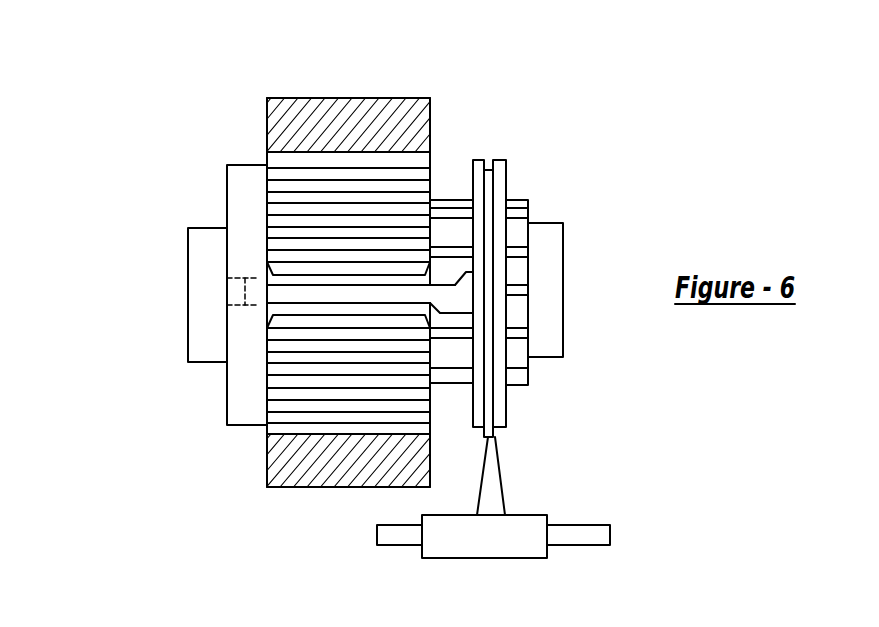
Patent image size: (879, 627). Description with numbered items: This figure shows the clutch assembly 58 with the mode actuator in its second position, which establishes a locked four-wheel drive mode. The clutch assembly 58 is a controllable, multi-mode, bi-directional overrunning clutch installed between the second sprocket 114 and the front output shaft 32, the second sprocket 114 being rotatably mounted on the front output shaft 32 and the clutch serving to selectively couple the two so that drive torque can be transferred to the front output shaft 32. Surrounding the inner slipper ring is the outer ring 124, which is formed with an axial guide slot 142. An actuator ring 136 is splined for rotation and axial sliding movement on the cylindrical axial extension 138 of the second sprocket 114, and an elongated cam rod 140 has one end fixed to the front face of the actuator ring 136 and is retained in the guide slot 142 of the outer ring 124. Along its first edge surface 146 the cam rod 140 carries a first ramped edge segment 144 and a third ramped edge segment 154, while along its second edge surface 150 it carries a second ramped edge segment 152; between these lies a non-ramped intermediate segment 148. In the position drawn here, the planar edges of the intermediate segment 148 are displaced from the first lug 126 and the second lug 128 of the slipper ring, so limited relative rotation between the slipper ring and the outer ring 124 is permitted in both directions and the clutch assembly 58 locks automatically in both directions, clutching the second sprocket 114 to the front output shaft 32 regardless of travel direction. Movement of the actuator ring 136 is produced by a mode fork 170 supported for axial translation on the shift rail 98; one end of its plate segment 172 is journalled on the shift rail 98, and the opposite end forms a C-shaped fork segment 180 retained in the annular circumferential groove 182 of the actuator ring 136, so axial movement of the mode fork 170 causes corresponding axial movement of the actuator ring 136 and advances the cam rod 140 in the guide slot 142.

The clutch assembly 58 is at (420, 97).
The second sprocket 114 is at (267, 152).
The first lug 126 is at (291, 273).
The second lug 128 is at (282, 318).
The cam rod 140 is at (344, 283).
The first edge surface 146 is at (377, 288).
The intermediate segment 148 is at (355, 297).
The second edge surface 150 is at (333, 307).
The second ramped edge segment 152 is at (465, 308).
The third ramped edge segment 154 is at (466, 275).
The outer ring 124 is at (219, 426).
The front output shaft 32 is at (203, 218).
The first ramped edge segment 144 is at (263, 280).
The guide slot 142 is at (237, 302).
The annular circumferential groove 182 is at (498, 161).
The C-shaped fork segment 180 is at (490, 437).
The actuator ring 136 is at (519, 151).
The axial extension 138 is at (531, 200).
The plate segment 172 is at (490, 472).
The mode fork 170 is at (543, 506).
The shift rail 98 is at (590, 533).